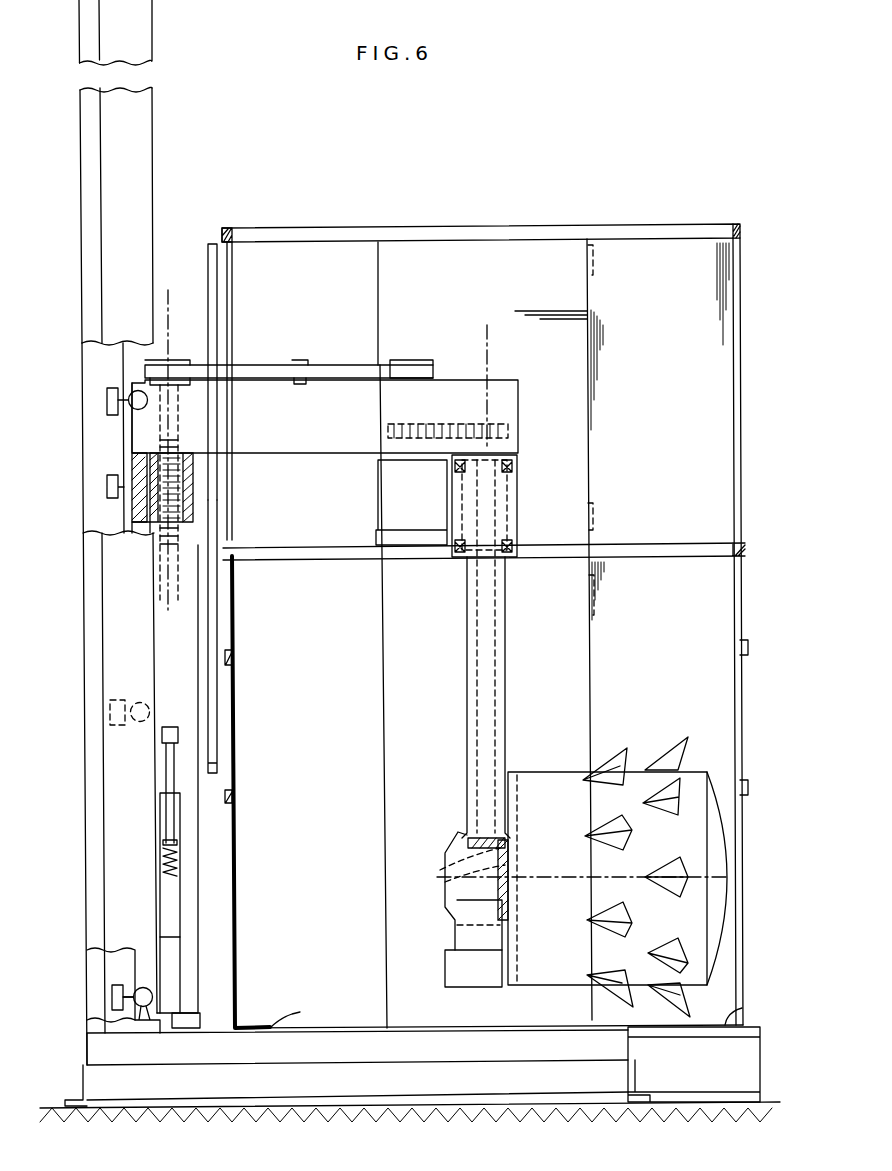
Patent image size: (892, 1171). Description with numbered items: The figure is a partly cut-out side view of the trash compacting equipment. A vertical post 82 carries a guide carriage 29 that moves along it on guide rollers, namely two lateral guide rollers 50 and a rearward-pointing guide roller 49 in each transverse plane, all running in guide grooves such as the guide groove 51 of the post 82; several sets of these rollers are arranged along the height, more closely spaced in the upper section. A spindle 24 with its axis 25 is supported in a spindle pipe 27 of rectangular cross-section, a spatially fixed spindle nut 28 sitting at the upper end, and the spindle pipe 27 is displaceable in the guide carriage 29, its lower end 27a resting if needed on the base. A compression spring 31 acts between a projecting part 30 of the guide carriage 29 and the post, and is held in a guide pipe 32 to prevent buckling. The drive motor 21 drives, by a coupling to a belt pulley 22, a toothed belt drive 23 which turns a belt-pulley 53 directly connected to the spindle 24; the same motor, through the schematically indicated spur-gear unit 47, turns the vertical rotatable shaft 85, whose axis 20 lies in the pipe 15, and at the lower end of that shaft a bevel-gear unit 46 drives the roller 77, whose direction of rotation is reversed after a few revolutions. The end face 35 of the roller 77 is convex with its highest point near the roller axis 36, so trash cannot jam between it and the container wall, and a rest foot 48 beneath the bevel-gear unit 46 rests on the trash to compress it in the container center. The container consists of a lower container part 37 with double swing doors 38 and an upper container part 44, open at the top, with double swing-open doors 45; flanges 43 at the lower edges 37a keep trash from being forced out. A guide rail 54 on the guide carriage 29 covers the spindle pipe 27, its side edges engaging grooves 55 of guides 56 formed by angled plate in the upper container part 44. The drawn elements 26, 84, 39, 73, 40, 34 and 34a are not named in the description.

The post 82 is at (85, 236).
The grooves 55 is at (208, 252).
The guide rail 54 is at (215, 732).
The axis of spindle 25 is at (168, 292).
The guides 56 is at (229, 310).
The lateral guide rollers 50 is at (136, 391).
The belt-pulley 53 is at (180, 360).
The support block 26 is at (299, 360).
The belt drive 23 is at (333, 364).
The belt pulley 22 is at (428, 358).
The axis of rotating shaft 20 is at (487, 330).
The upper container part 44 is at (638, 225).
The housing block 84 is at (512, 386).
The spur-gear unit 47 is at (512, 433).
The double swing-open doors 45 is at (722, 430).
The rearward-pointing guide roller 49 is at (110, 480).
The spindle nut 28 is at (190, 462).
The spindle 24 is at (190, 504).
The drive motor 21 is at (385, 490).
The spindle pipe 27 is at (150, 530).
The double swing doors 38 is at (733, 626).
The pipe 15 is at (500, 634).
The vertical rotatable shaft 85 is at (480, 702).
The projecting part 30 is at (168, 727).
The compression spring 31 is at (162, 868).
The guide carriage 29 is at (195, 871).
The guide pipe 32 is at (175, 912).
The guide groove 51 is at (115, 966).
The lower end of spindle pipe 27a is at (183, 1027).
The lower container part 37 is at (223, 830).
The lower edges of container walls 37a is at (437, 1020).
The base 39 is at (334, 1048).
The foundation 73 is at (77, 1060).
The support box 40 is at (726, 1076).
The flanges 43 is at (290, 1022).
The end face 35 is at (715, 848).
The roller 77 is at (538, 786).
The tooth 34 is at (662, 762).
The tooth 34a is at (697, 768).
The axis of the roller 36 is at (548, 876).
The bevel-gear unit 46 is at (448, 866).
The rest foot 48 is at (478, 985).